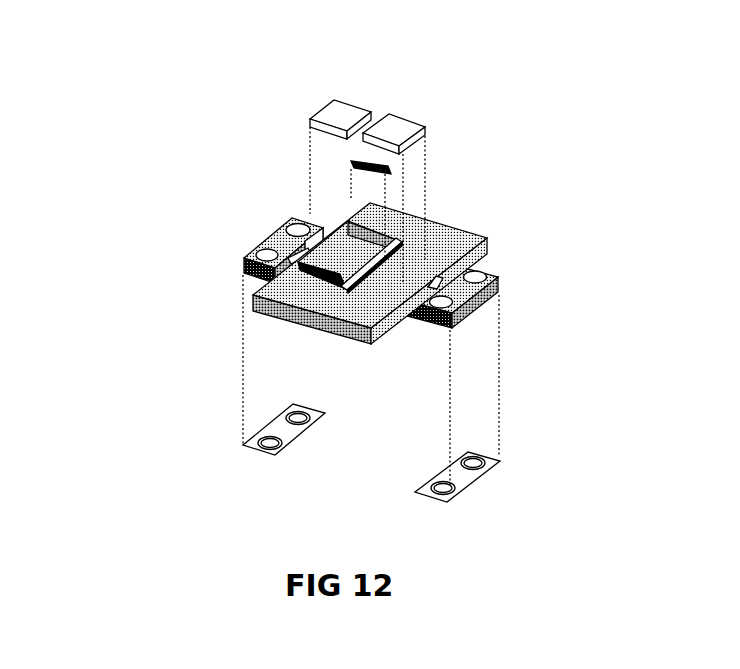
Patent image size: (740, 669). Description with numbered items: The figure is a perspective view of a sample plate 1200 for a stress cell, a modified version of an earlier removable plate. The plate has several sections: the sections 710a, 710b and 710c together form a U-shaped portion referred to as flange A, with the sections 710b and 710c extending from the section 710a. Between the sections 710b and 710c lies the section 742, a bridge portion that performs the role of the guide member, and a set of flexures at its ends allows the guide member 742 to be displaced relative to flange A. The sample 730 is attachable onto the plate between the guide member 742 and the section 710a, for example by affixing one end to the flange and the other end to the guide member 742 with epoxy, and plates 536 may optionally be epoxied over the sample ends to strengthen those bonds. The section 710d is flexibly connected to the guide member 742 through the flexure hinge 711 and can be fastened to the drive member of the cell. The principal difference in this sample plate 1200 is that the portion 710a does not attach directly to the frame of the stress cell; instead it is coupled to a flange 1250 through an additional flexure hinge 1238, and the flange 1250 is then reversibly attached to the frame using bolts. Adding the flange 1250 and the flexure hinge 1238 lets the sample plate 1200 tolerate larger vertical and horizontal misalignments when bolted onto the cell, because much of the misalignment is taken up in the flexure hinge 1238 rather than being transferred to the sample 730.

The sample plate 1200 is at (107, 112).
The cover blocks 536 is at (341, 108).
The sample 730 is at (408, 168).
The flexure hinge 711 is at (300, 236).
The section 710d is at (220, 226).
The flexure-hinge 1238 is at (440, 276).
The guide member 742 is at (299, 281).
The section 710c is at (291, 298).
The section 710b is at (420, 233).
The section 710a is at (489, 325).
The flange 1250 is at (500, 303).